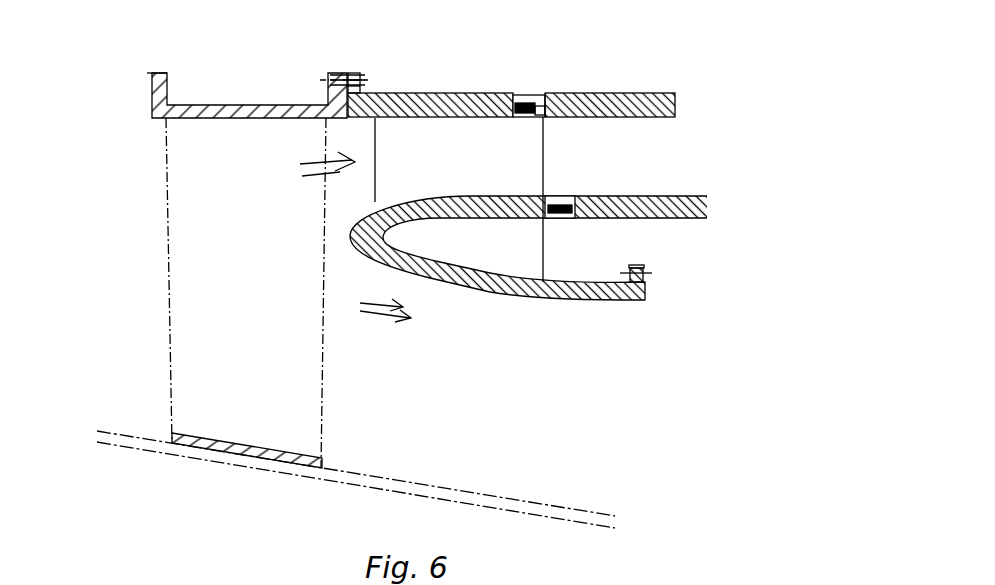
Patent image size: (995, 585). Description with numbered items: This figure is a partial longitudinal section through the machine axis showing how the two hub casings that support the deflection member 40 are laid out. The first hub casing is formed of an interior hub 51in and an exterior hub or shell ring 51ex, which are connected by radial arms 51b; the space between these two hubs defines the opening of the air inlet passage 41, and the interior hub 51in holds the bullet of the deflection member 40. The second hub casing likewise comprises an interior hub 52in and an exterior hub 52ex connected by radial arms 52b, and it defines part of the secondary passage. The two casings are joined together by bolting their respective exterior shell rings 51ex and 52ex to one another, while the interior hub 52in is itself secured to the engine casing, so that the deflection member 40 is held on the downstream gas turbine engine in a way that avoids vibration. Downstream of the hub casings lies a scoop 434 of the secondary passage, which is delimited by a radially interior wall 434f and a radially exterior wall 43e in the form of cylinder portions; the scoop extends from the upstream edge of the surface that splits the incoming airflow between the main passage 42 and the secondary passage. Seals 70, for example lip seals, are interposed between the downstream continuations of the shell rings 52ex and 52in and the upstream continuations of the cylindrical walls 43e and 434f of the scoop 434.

The exterior hub or shell ring 51ex is at (229, 108).
The exterior hub 52ex is at (437, 112).
The seals 70 is at (525, 98).
The radially exterior wall 43e is at (648, 97).
The air inlet passage 41 is at (126, 273).
The radial arms 51b is at (259, 273).
The radial arms 52b is at (471, 172).
The scoop 434 is at (698, 177).
The radially interior wall 434f is at (677, 220).
The interior hub 52in is at (472, 220).
The main passage 42 is at (535, 385).
The deflection member 40 is at (396, 482).
The interior hub 51in is at (238, 456).